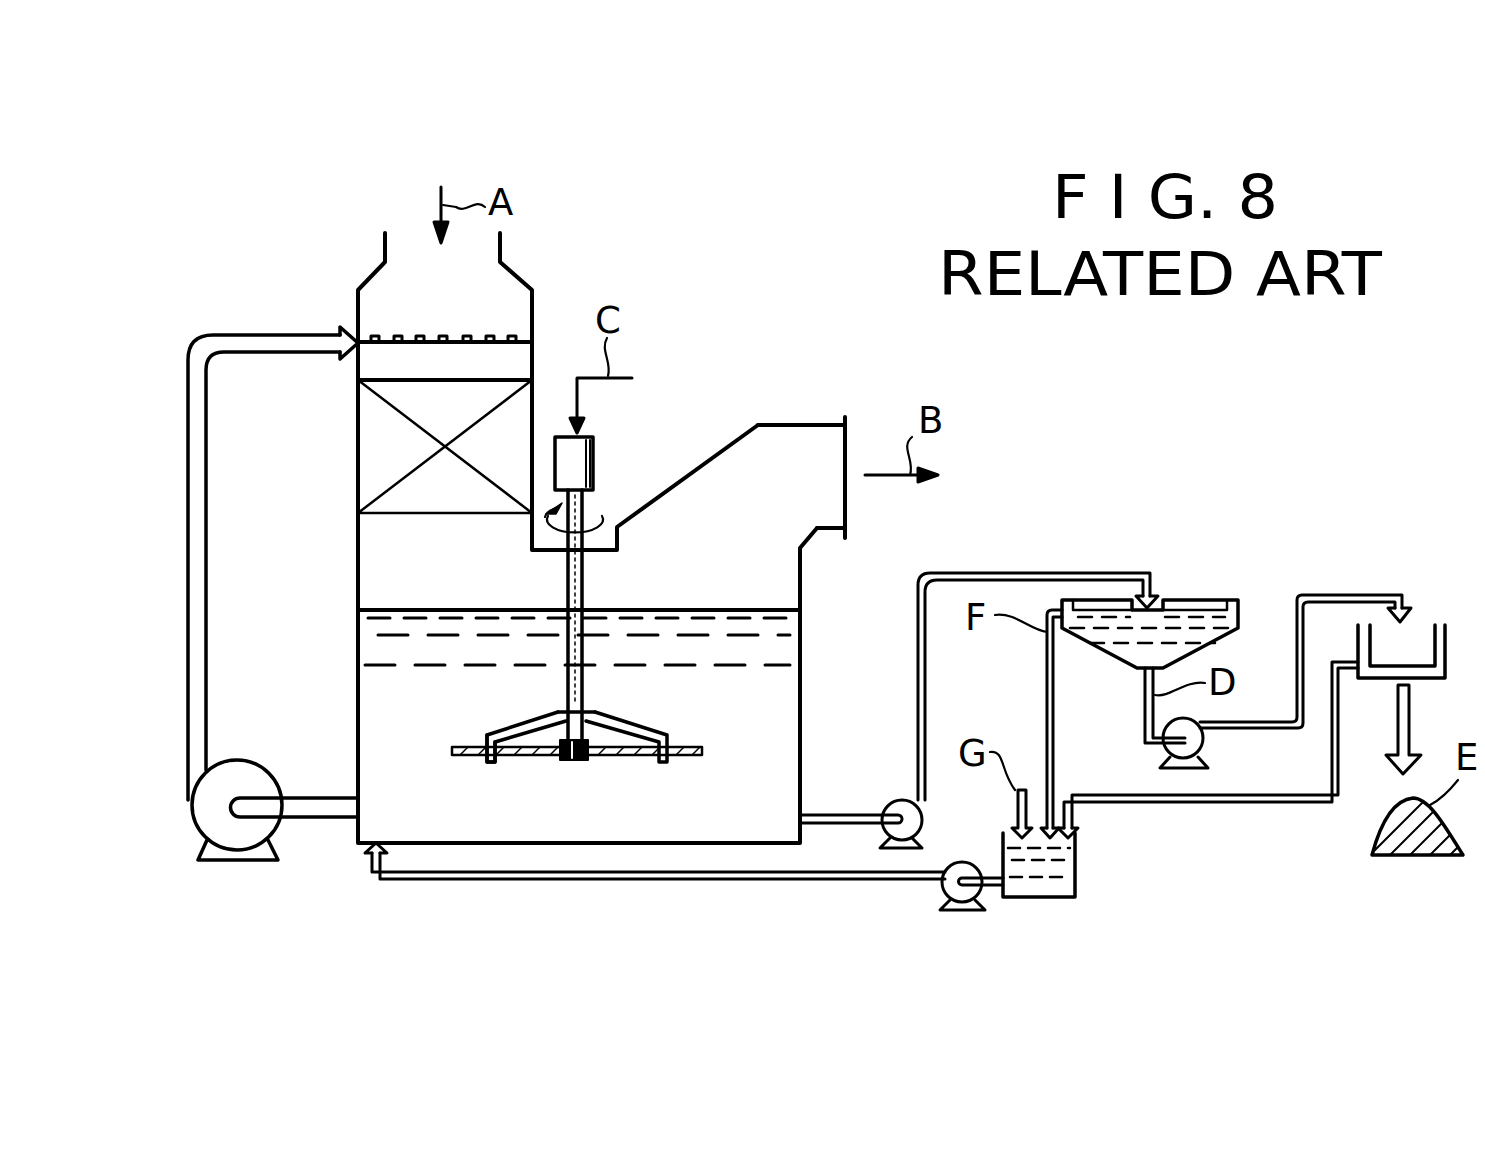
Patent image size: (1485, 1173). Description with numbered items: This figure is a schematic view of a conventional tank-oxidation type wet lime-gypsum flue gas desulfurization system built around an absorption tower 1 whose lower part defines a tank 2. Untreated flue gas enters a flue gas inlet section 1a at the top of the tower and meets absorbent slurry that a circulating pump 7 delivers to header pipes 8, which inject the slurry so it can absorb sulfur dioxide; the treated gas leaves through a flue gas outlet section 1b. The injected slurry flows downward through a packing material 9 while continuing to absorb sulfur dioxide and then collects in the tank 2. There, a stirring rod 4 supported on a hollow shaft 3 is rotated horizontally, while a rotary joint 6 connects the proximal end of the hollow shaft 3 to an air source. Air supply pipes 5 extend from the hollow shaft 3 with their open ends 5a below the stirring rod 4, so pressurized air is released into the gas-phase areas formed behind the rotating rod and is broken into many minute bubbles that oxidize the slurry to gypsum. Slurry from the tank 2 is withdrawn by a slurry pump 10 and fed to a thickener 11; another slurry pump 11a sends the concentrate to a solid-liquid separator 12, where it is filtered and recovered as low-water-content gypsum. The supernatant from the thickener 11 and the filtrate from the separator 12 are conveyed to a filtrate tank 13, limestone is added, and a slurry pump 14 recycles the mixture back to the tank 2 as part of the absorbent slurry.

The absorption tower 1 is at (368, 560).
The flue gas inlet section 1a is at (368, 357).
The flue gas outlet section 1b is at (812, 425).
The tank 2 is at (442, 845).
The hollow shaft 3 is at (588, 684).
The stirring rod 4 is at (528, 756).
The air supply pipes 5 is at (503, 732).
The open ends 5a is at (489, 765).
The rotary joint 6 is at (596, 450).
The circulating pump 7 is at (257, 762).
The header pipes 8 is at (408, 338).
The packing material 9 is at (368, 449).
The slurry pump 10 is at (893, 800).
The thickener 11 is at (1210, 600).
The slurry pump 11a is at (1205, 741).
The solid-liquid separator 12 is at (1440, 625).
The filtrate tank 13 is at (1078, 873).
The slurry pump 14 is at (940, 893).